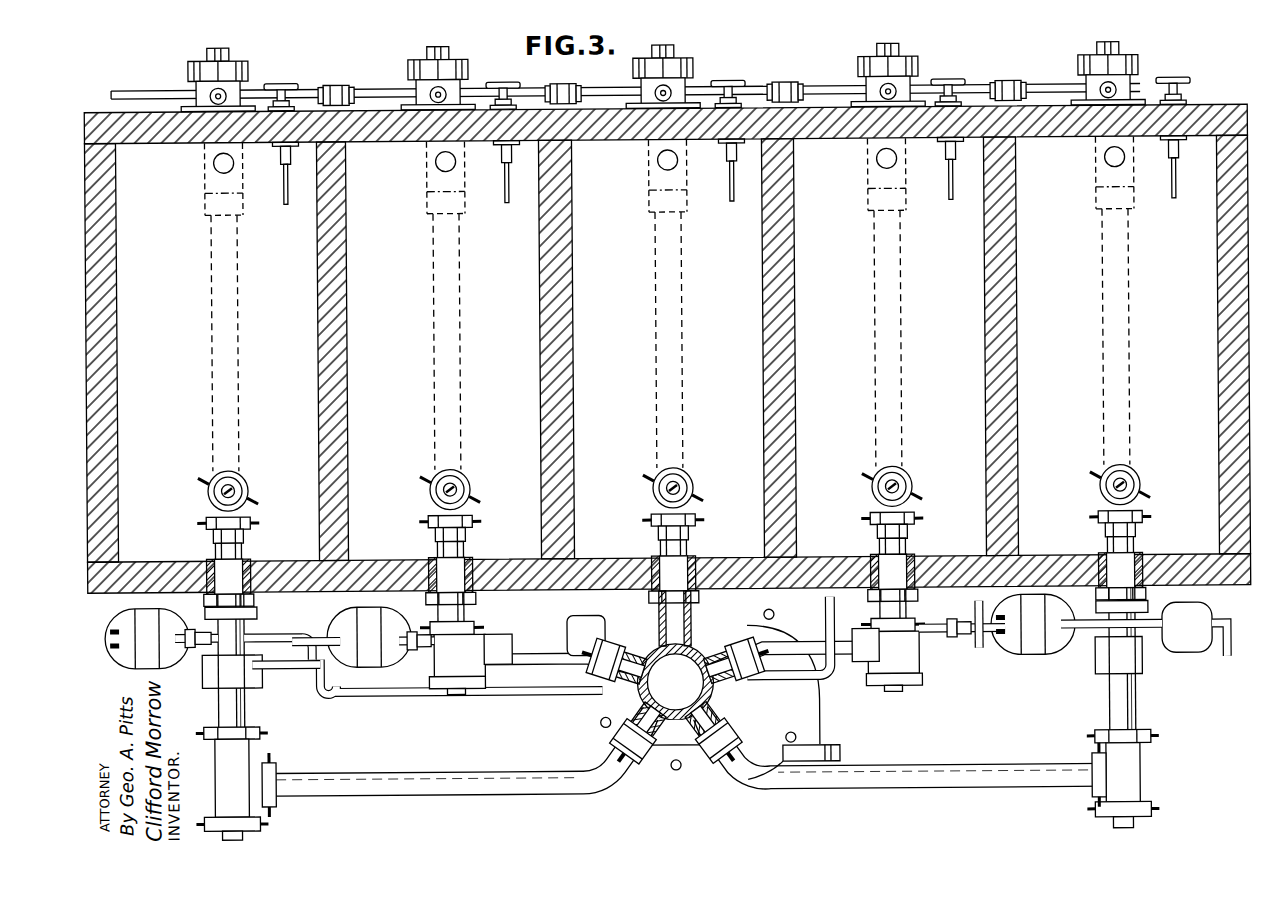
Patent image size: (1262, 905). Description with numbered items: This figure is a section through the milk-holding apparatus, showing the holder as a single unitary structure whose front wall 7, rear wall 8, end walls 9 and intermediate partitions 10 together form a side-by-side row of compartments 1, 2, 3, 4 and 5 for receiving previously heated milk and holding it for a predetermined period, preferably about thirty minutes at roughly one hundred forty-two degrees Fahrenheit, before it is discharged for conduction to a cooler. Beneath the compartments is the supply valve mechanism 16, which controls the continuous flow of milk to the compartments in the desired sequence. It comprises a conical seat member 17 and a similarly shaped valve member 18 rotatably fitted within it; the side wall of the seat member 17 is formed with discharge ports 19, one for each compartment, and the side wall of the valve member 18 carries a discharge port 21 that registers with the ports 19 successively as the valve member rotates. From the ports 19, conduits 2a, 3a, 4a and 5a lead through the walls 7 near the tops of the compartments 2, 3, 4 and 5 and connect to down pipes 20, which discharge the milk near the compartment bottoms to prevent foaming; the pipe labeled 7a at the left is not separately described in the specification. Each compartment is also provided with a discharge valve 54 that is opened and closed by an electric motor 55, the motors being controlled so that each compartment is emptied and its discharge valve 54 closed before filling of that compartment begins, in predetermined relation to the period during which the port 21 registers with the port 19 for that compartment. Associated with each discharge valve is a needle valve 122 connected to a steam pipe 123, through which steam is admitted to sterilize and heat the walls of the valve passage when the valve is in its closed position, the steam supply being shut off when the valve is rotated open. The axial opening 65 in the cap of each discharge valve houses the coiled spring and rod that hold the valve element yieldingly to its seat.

The compartment 1 is at (217, 352).
The compartment 2 is at (443, 350).
The compartment 3 is at (667, 348).
The compartment 4 is at (889, 347).
The compartment 5 is at (1117, 345).
The front wall 7 is at (520, 560).
The rear wall 8 is at (1060, 132).
The end wall 9 is at (110, 330).
The intermediate partition 10 is at (348, 428).
The valve mechanism 16 is at (657, 707).
The seat member 17 is at (600, 708).
The valve member 18 is at (704, 646).
The discharge port 19 is at (642, 682).
The down pipe 20 is at (690, 478).
The discharge port 21 is at (697, 704).
The discharge valve 54 is at (482, 83).
The electric motor 55 is at (575, 625).
The axial opening 65 is at (238, 352).
The needle valve 122 is at (246, 84).
The steam pipe 123 is at (378, 87).
The conduit 2a is at (518, 688).
The conduit 3a is at (690, 538).
The conduit 4a is at (908, 542).
The conduit 5a is at (1106, 690).
The outlet pipe of compartment 1 7a is at (244, 708).